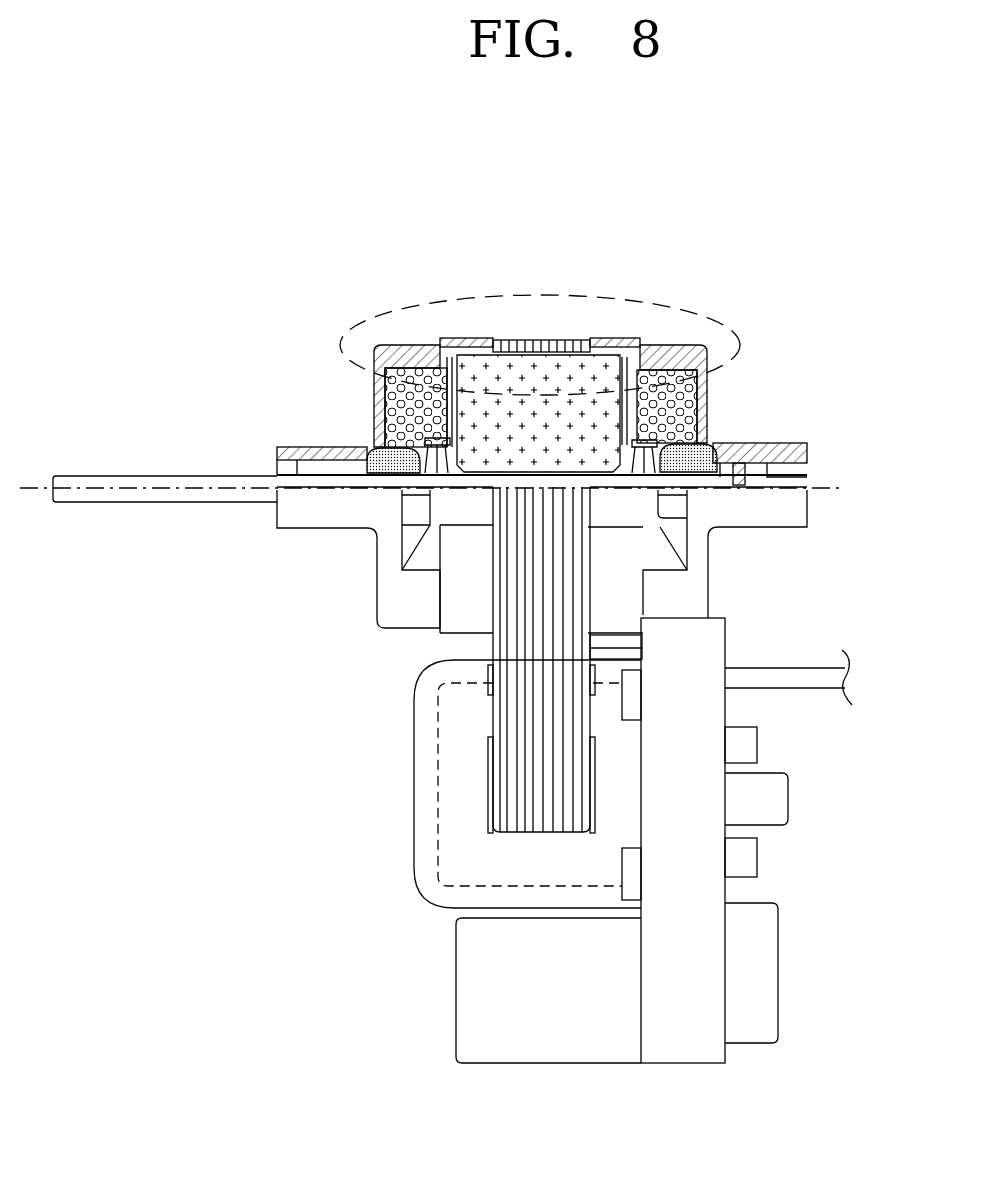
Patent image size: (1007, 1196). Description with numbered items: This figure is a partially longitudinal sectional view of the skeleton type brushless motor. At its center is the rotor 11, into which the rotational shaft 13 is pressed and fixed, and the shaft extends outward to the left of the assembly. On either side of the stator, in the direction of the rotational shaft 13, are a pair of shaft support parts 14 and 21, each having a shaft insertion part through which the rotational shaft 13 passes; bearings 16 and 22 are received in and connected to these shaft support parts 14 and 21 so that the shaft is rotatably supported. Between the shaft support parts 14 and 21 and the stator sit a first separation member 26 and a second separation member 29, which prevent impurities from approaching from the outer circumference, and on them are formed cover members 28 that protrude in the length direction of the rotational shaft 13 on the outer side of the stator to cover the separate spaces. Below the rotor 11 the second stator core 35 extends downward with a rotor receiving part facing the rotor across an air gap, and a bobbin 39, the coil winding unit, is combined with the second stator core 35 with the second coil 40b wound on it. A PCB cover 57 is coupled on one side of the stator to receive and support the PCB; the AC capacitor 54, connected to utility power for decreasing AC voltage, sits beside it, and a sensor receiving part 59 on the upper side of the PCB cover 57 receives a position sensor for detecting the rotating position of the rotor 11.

The rotor 11 is at (607, 393).
The rotational shaft 13 is at (80, 503).
The shaft support part 14 is at (385, 338).
The bearing 16 is at (360, 455).
The shaft support part 21 is at (700, 338).
The bearing 22 is at (703, 460).
The first separation member 26 is at (462, 338).
The cover member 28 is at (540, 338).
The second separation member 29 is at (617, 338).
The second stator core 35 is at (510, 712).
The bobbin 39 is at (418, 843).
The second coil 40b is at (437, 790).
The AC capacitor 54 is at (545, 1045).
The PCB cover 57 is at (690, 1045).
The sensor receiving part 59 is at (617, 648).